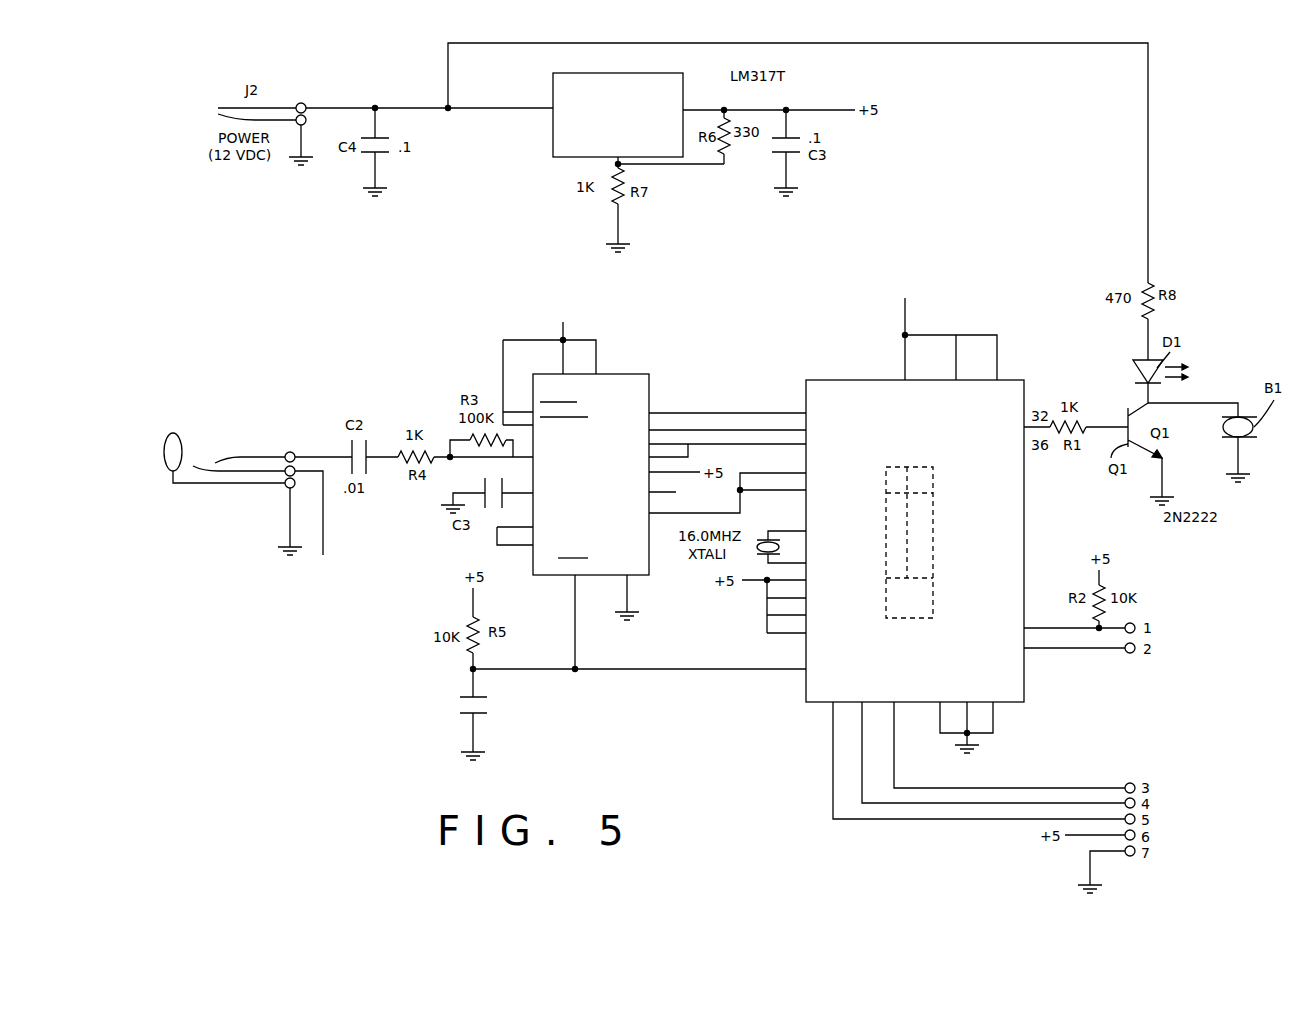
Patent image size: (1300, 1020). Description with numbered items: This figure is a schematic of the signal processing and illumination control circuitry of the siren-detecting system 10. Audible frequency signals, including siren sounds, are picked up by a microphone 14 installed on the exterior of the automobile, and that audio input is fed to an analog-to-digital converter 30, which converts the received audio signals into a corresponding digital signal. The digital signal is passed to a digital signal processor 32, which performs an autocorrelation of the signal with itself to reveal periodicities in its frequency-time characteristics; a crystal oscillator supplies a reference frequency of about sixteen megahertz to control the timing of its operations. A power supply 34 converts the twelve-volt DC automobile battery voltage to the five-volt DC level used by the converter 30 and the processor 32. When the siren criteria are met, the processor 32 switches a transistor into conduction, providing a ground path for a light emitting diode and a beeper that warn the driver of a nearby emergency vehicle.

The system 10 is at (469, 698).
The microphone 14 is at (259, 495).
The analog-to-digital converter 30 is at (627, 360).
The digital signal processor 32 is at (1027, 381).
The power supply 34 is at (553, 138).